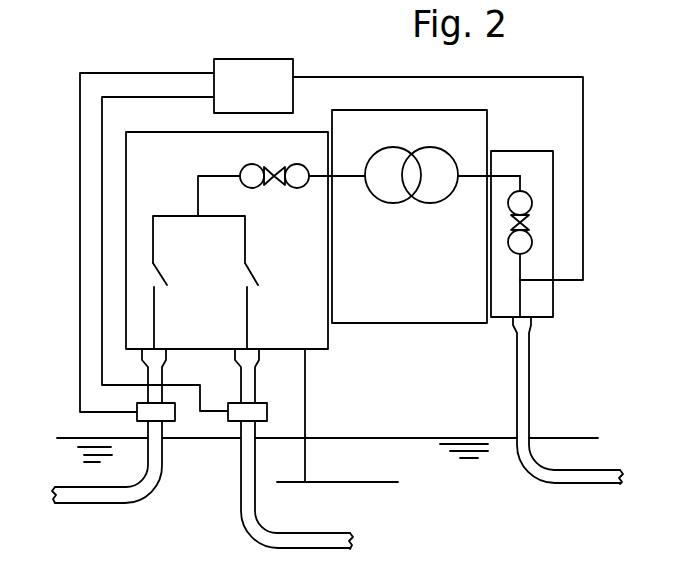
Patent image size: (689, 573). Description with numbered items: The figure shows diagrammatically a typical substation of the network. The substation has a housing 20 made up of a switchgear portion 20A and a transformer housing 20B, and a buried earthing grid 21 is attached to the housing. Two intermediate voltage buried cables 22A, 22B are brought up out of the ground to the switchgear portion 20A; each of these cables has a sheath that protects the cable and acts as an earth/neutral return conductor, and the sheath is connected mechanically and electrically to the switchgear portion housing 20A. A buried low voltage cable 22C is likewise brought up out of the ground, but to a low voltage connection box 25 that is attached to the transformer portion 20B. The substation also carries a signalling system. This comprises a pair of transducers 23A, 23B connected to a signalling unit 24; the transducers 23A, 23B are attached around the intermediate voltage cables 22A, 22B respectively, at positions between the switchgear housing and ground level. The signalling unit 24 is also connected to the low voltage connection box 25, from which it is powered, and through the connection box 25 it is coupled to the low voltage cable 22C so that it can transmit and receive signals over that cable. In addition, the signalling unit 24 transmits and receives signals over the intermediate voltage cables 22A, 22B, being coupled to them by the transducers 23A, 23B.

The housing 20 is at (323, 258).
The switchgear portion 20A is at (178, 172).
The transformer housing 20B is at (392, 313).
The buried earthing grid 21 is at (337, 415).
The intermediate voltage buried cable 22A is at (109, 440).
The intermediate voltage buried cable 22B is at (294, 449).
The buried low voltage cable 22C is at (568, 400).
The transducer 23A is at (137, 418).
The transducer 23B is at (267, 409).
The signalling unit 24 is at (262, 97).
The low voltage connection box 25 is at (538, 224).